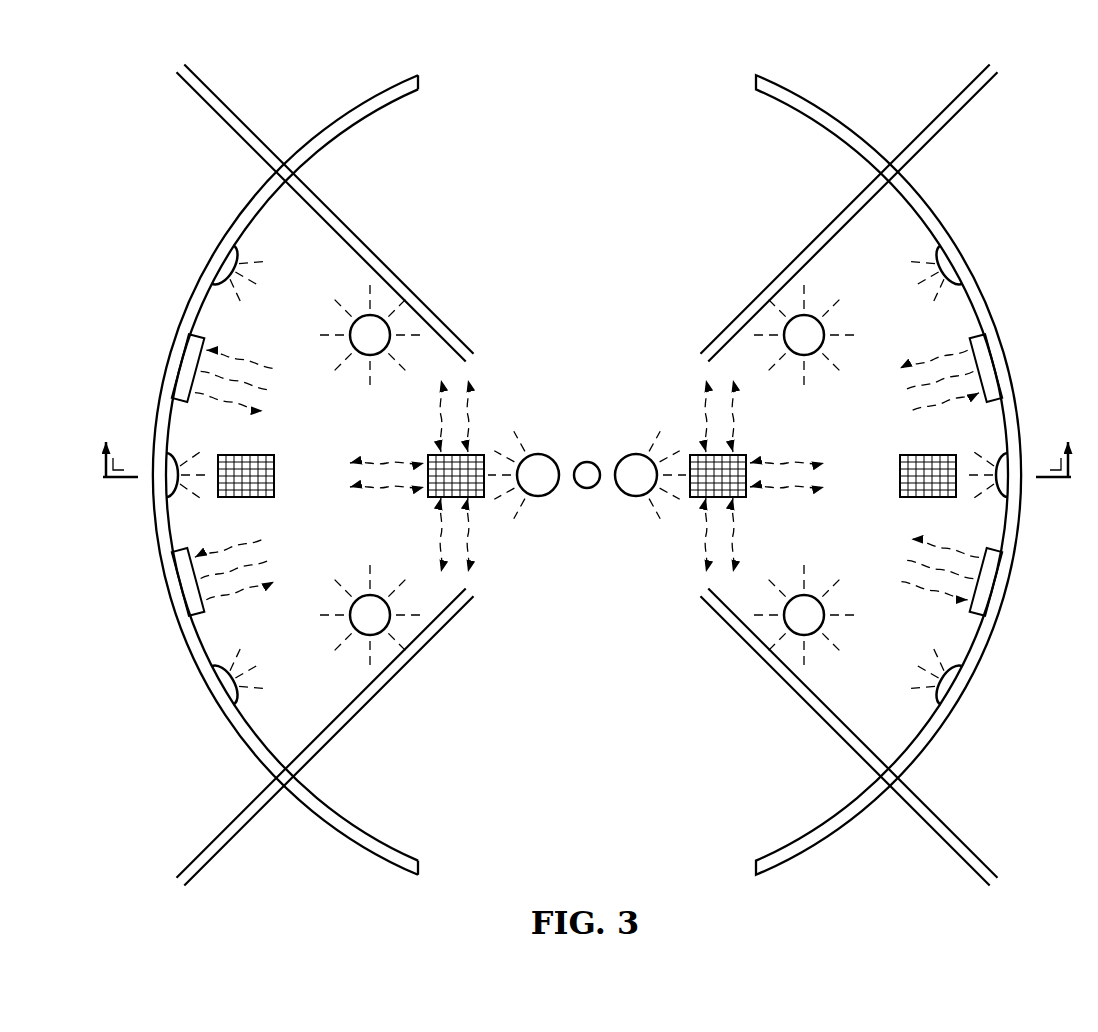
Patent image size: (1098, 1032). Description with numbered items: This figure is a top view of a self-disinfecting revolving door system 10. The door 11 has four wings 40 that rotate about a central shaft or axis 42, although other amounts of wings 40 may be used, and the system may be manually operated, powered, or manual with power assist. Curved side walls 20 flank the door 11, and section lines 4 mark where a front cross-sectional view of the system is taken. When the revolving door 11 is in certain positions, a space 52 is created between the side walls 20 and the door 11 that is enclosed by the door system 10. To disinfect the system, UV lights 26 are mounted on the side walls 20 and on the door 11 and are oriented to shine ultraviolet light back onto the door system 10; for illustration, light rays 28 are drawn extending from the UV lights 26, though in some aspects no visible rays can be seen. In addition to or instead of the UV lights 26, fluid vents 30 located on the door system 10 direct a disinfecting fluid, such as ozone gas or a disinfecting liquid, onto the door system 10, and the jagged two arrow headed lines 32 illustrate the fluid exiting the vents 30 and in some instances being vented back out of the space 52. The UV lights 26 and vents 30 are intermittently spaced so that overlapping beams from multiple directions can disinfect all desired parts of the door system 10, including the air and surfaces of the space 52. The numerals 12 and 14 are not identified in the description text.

The section lines 4 is at (587, 439).
The revolving door system 10 is at (986, 80).
The door 11 is at (587, 475).
The first end 12 is at (470, 76).
The second end 14 is at (470, 878).
The side walls 20 is at (257, 193).
The UV lights 26 is at (548, 497).
The light rays 28 is at (260, 283).
The fluid vents 30 is at (200, 338).
The jagged two arrow headed lines 32 is at (249, 362).
The wings 40 is at (347, 225).
The central shaft or axis 42 is at (594, 461).
The space 52 is at (386, 535).